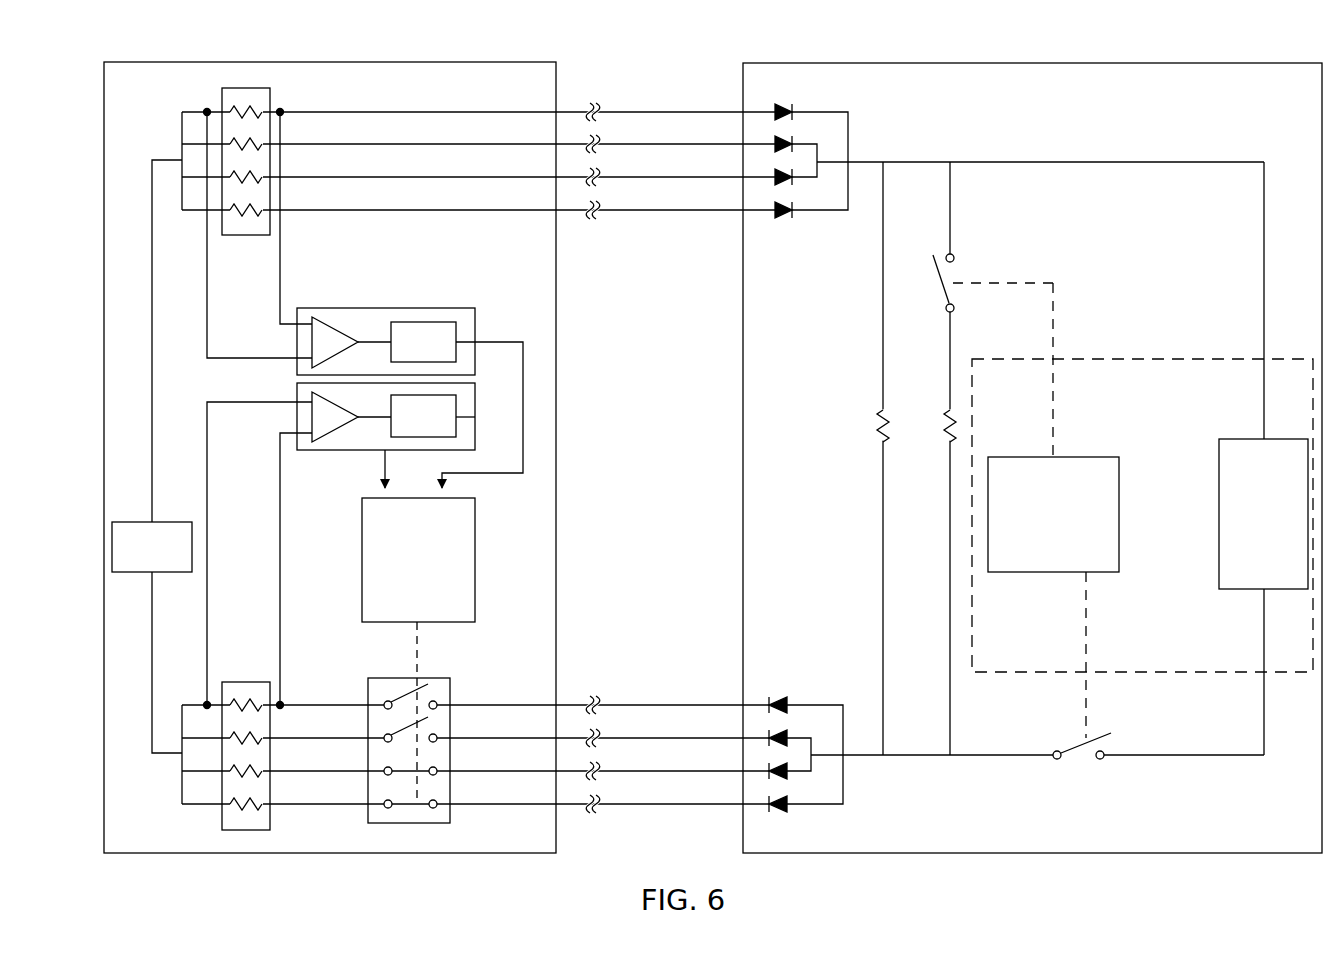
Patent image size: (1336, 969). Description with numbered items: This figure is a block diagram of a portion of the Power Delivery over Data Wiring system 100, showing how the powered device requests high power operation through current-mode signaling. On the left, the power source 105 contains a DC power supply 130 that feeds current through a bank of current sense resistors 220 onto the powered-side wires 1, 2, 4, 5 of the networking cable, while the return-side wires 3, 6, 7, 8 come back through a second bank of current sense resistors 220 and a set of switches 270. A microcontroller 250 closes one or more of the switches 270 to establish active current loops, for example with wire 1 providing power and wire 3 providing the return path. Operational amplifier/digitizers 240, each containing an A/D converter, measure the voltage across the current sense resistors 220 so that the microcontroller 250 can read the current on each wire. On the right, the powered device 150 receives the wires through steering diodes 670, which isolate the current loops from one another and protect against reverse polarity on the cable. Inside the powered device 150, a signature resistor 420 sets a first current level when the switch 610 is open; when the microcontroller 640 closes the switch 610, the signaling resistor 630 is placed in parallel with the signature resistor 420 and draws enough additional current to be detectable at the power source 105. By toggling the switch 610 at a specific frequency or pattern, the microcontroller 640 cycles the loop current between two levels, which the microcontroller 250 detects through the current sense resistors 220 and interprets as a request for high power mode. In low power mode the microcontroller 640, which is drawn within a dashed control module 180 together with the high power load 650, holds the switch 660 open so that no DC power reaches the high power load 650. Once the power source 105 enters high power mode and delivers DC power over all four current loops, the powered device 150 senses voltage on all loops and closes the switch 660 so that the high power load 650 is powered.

The PDDW system 100 is at (207, 28).
The power source 105 is at (505, 90).
The DC power supply 130 is at (137, 557).
The powered device 150 is at (1237, 95).
The control module 180 is at (1155, 388).
The current sense resistors 220 is at (272, 98).
The operational amplifier/digitizers 240 is at (443, 308).
The microcontroller 250 is at (402, 610).
The switch 270 is at (450, 682).
The wire 1 is at (645, 110).
The wire 2 is at (645, 142).
The wire 3 is at (645, 703).
The wire 4 is at (645, 175).
The wire 5 is at (645, 208).
The wire 6 is at (645, 736).
The wire 7 is at (645, 769).
The wire 8 is at (645, 802).
The signature resistor 420 is at (878, 445).
The switch 610 is at (943, 295).
The signaling resistor 630 is at (945, 440).
The microcontroller 640 is at (1038, 566).
The high power load 650 is at (1249, 577).
The switch 660 is at (1077, 743).
The steering diodes 670 is at (793, 230).